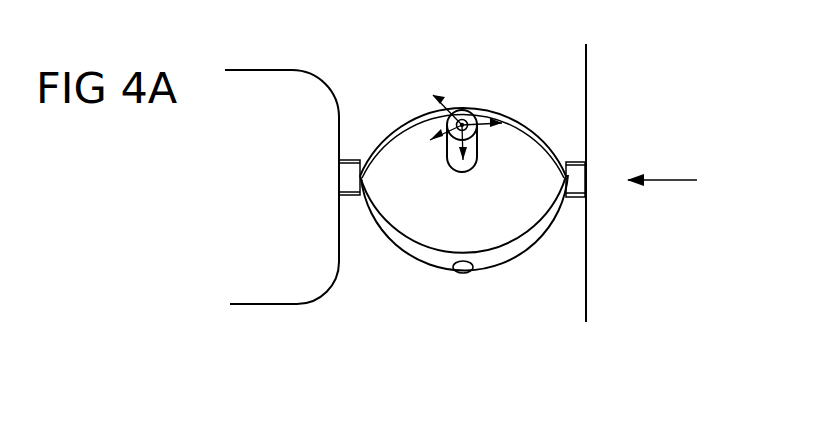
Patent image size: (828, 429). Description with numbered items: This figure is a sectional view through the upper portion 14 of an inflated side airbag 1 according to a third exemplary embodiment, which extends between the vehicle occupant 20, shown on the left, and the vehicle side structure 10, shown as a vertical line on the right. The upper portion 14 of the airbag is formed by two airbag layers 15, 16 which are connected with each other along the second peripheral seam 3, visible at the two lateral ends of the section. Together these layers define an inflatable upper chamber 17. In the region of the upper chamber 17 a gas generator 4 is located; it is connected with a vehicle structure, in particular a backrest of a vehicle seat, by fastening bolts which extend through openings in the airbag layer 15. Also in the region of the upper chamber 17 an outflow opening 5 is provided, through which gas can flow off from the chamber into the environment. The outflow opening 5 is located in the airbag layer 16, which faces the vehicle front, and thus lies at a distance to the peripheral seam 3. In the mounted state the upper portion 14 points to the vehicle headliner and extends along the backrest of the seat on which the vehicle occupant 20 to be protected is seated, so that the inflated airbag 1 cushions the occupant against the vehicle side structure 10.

The airbag 1 is at (560, 255).
The second peripheral seam 3 is at (568, 177).
The gas generator 4 is at (460, 118).
The outflow opening 5 is at (463, 273).
The vehicle side structure 10 is at (587, 107).
The upper portion 14 is at (378, 258).
The airbag layer 15 is at (517, 122).
The airbag layer 16 is at (420, 272).
The upper chamber 17 is at (518, 208).
The vehicle occupant 20 is at (273, 86).